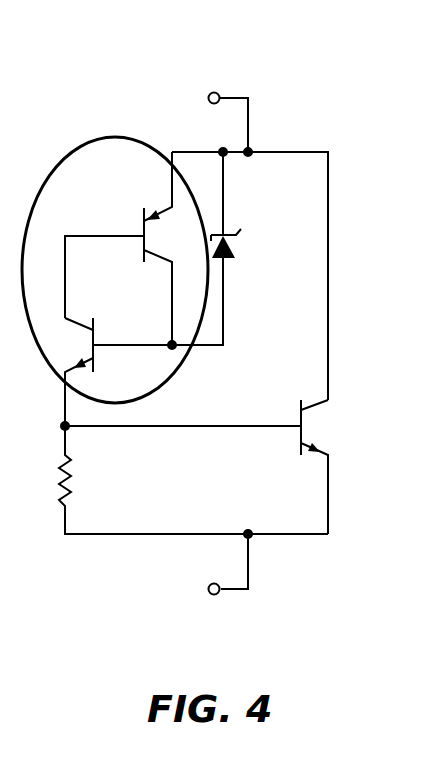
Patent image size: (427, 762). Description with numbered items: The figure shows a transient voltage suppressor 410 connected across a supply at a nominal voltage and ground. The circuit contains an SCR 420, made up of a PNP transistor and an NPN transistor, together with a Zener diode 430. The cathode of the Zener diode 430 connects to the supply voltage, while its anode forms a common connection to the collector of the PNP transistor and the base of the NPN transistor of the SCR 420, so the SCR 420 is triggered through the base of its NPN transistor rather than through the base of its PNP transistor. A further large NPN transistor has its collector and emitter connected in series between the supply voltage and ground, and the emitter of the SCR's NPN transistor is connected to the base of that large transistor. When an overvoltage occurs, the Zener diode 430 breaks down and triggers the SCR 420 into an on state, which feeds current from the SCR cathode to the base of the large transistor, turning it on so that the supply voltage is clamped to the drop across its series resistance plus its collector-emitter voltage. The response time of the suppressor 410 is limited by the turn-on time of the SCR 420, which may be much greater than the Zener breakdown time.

The transient voltage suppressor 410 is at (138, 70).
The SCR 420 is at (106, 138).
The Zener diode 430 is at (231, 258).